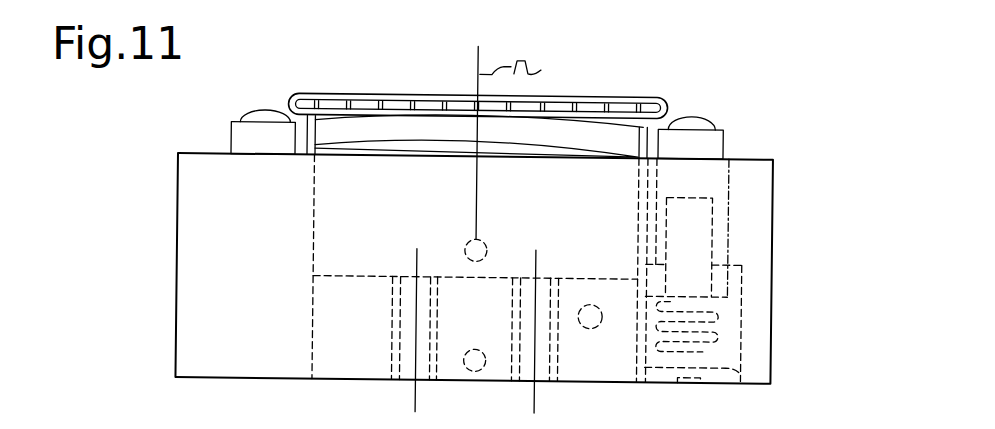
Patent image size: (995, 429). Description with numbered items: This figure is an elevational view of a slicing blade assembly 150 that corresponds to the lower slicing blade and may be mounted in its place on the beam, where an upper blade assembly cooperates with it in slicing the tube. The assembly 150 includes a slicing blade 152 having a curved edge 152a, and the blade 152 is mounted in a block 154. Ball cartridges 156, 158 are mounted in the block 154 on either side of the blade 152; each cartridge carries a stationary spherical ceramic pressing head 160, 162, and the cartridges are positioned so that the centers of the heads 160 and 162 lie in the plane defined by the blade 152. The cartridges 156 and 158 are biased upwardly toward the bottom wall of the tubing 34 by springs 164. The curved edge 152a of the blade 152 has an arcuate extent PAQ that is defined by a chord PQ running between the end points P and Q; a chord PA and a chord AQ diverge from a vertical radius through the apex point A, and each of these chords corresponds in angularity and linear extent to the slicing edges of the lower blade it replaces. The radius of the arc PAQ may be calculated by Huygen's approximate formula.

The tubing 34 is at (594, 85).
The slicing blade assembly 150 is at (158, 282).
The slicing blade 152 is at (341, 211).
The curved edge 152a is at (393, 110).
The block 154 is at (774, 206).
The ball cartridge 156 is at (231, 133).
The ball cartridge 158 is at (725, 140).
The spherical ceramic pressing head 160 is at (250, 112).
The spherical ceramic pressing head 162 is at (700, 114).
The spring 164 is at (720, 318).
The point A is at (477, 104).
The point P is at (292, 111).
The point Q is at (666, 117).